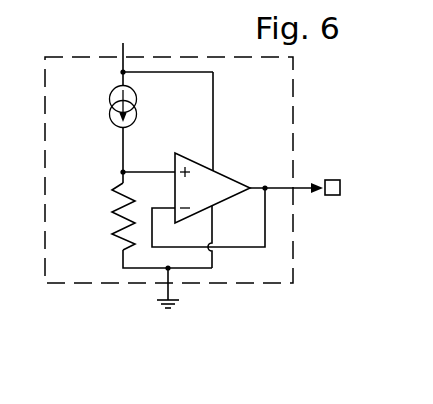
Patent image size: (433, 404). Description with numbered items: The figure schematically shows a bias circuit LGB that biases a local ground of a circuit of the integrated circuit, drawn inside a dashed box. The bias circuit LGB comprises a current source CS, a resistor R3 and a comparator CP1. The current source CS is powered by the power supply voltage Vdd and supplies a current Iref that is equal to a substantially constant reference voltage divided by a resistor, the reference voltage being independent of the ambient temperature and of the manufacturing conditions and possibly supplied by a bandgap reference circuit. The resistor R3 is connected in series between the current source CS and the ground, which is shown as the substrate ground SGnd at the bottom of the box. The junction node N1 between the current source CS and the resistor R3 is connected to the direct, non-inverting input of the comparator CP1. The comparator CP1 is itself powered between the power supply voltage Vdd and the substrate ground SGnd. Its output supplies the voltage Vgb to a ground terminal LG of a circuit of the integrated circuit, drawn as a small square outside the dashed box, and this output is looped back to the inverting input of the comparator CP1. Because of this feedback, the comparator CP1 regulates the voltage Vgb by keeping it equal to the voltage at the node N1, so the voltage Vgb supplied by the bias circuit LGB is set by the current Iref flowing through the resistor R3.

The bias circuit LGB is at (287, 88).
The power supply voltage Vdd is at (140, 43).
The current source CS is at (120, 97).
The current Iref is at (150, 106).
The junction node N1 is at (124, 166).
The resistor R3 is at (110, 237).
The comparator CP1 is at (219, 197).
The voltage Vgb is at (285, 176).
The ground terminal LG is at (332, 196).
The substrate ground SGnd is at (181, 300).